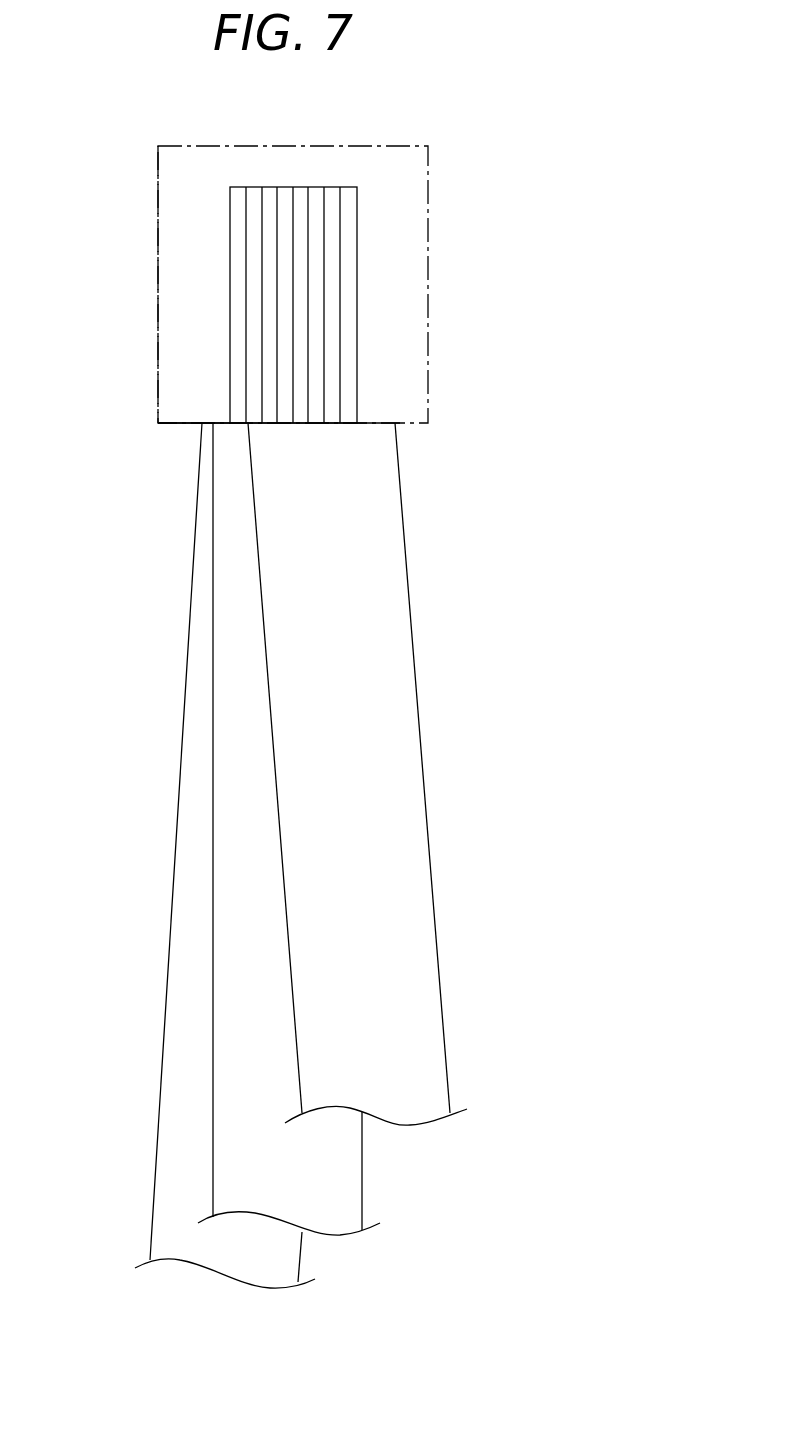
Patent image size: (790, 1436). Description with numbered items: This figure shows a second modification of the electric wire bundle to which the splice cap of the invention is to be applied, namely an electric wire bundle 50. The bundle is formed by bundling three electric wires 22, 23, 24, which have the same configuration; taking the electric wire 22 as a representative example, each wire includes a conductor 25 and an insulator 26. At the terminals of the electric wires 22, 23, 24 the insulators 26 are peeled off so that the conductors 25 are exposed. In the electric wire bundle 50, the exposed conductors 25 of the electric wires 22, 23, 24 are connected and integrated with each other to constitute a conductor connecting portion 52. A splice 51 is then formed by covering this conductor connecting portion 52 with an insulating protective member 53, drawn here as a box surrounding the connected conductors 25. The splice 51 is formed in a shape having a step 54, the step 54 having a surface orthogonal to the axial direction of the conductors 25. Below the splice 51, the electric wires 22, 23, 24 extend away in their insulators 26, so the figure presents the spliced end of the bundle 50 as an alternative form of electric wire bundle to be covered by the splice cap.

The electric wire 22 is at (393, 821).
The electric wire 23 is at (210, 698).
The electric wire 24 is at (177, 757).
The conductor 25 is at (389, 305).
The insulator 26 is at (403, 493).
The electric wire bundle 50 is at (333, 312).
The splice 51 is at (430, 228).
The conductor connecting portion 52 is at (397, 305).
The insulating protective member 53 is at (158, 252).
The step 54 is at (183, 424).